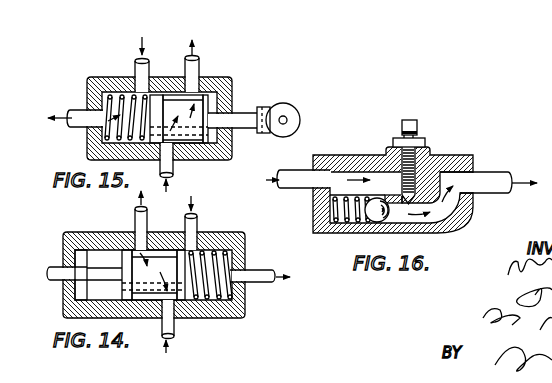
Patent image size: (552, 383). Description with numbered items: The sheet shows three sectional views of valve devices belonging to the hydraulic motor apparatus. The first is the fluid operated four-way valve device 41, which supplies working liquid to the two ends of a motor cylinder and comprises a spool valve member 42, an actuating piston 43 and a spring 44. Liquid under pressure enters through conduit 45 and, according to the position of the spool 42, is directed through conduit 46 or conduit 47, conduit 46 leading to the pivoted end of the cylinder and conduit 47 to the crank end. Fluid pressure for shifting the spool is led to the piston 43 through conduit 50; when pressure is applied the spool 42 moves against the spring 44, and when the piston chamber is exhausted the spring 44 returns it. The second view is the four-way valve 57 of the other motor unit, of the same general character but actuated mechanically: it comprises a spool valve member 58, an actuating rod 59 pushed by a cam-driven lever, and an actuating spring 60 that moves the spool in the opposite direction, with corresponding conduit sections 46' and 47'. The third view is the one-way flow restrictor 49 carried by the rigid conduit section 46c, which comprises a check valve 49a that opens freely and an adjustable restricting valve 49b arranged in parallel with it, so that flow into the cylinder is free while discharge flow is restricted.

In FIG. 14, the four-way valve device 41 is at (240, 318).
In FIG. 14, the spool valve member 42 is at (158, 262).
In FIG. 14, the actuating piston 43 is at (78, 262).
In FIG. 14, the spring 44 is at (230, 288).
In FIG. 14, the conduit 45 is at (170, 324).
In FIG. 15, the conduit 45 is at (173, 163).
In FIG. 14, the conduit 46 is at (215, 223).
In FIG. 14, the conduit 47 is at (119, 220).
In FIG. 14, the conduit 50 is at (60, 274).
In FIG. 15, the four-way valve 57 is at (227, 78).
In FIG. 15, the spool valve member 58 is at (173, 98).
In FIG. 15, the actuating rod 59 is at (238, 116).
In FIG. 15, the actuating spring 60 is at (106, 75).
In FIG. 15, the conduit section 46' is at (211, 55).
In FIG. 15, the conduit section 47' is at (128, 54).
In FIG. 16, the rigid conduit section 46c is at (492, 172).
In FIG. 16, the one-way flow restrictor 49 is at (455, 232).
In FIG. 16, the check valve 49a is at (366, 224).
In FIG. 16, the adjustable restricting valve 49b is at (398, 165).